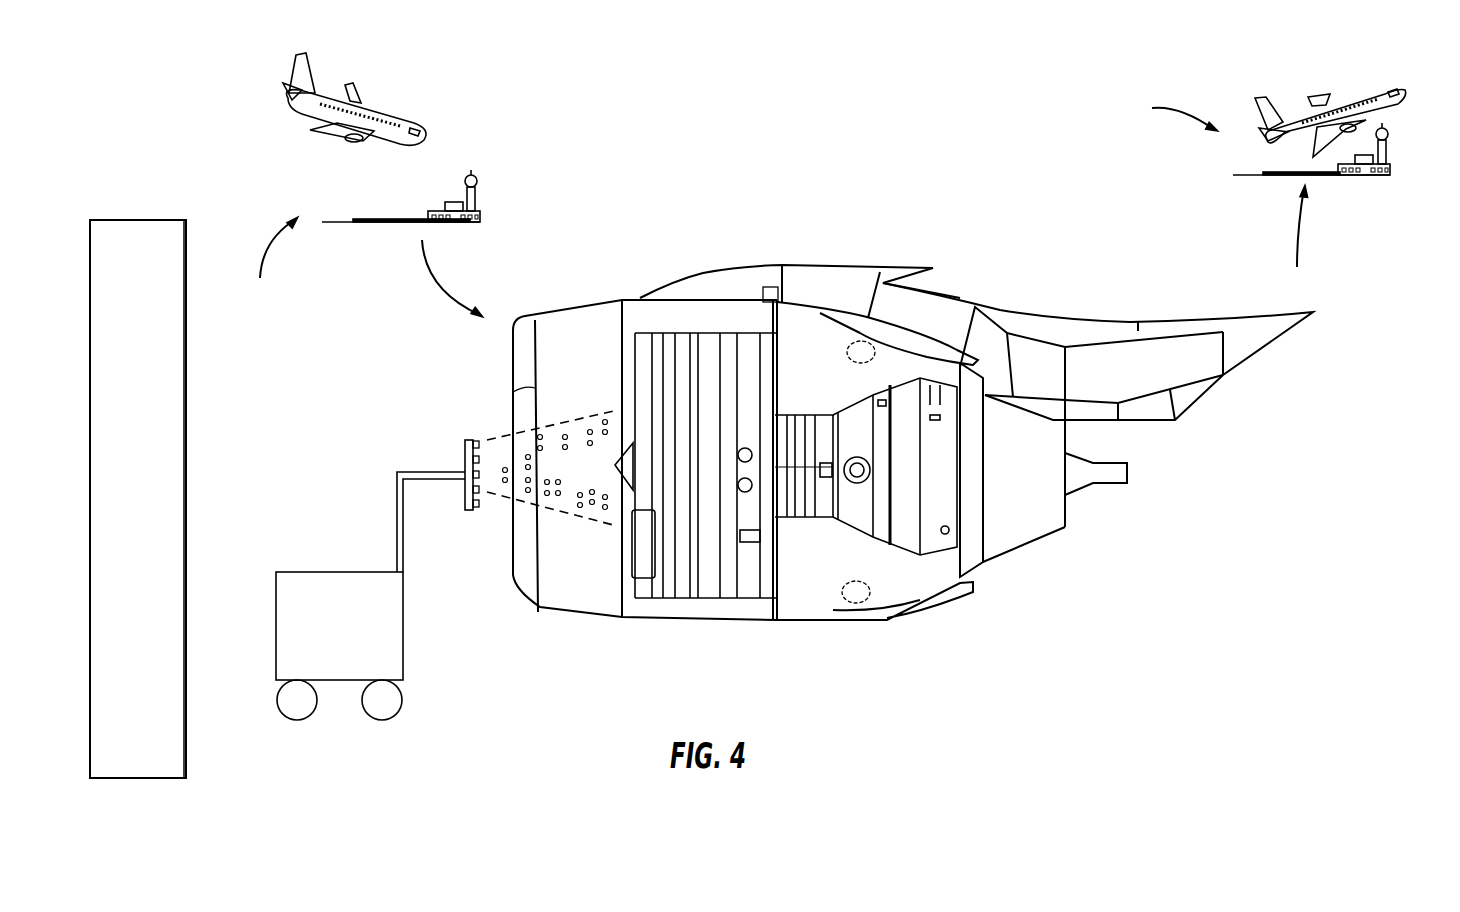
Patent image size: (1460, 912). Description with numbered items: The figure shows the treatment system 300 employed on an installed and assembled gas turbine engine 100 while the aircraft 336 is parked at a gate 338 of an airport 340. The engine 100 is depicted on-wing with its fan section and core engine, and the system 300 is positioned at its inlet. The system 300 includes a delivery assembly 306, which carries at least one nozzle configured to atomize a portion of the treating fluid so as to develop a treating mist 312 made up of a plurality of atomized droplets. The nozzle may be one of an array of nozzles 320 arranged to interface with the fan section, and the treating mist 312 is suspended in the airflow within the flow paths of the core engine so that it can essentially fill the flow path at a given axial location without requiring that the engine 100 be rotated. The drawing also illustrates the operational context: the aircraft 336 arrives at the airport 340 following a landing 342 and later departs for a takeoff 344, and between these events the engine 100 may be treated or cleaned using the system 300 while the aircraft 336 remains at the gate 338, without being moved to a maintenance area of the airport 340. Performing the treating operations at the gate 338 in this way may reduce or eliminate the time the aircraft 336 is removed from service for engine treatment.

The gas turbine engine 100 is at (1025, 590).
The system 300 is at (322, 455).
The delivery assembly 306 is at (465, 446).
The treating mist 312 is at (580, 497).
The array of nozzles 320 is at (488, 434).
The aircraft 336 is at (404, 115).
The gate 338 is at (148, 237).
The airport 340 is at (480, 206).
The landing 342 is at (269, 264).
The takeoff 344 is at (1165, 113).